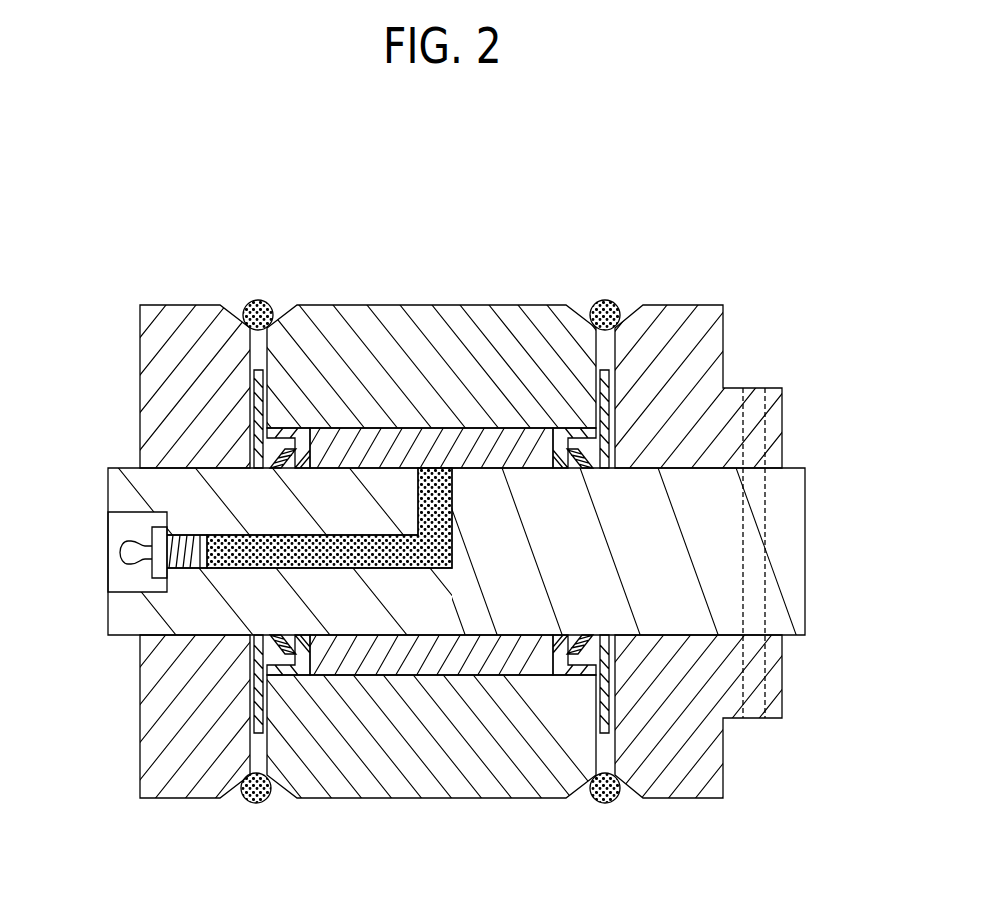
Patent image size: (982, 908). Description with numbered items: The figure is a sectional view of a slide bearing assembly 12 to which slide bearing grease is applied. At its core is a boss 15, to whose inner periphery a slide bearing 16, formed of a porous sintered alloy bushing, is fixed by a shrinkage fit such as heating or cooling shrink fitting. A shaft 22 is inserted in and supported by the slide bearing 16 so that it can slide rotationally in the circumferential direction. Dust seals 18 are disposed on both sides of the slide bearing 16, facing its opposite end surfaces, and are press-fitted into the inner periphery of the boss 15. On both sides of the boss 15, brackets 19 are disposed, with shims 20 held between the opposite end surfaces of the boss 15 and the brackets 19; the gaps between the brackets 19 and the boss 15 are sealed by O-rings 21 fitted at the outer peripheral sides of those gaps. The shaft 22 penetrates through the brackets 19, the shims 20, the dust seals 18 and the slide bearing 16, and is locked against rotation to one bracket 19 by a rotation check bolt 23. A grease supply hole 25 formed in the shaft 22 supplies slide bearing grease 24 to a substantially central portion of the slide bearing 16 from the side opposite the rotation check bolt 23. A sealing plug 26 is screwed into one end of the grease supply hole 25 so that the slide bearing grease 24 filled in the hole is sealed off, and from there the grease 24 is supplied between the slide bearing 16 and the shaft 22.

The slide bearing assembly 12 is at (451, 238).
The boss 15 is at (402, 306).
The slide bearing 16 is at (478, 436).
The dust seal 18 is at (295, 432).
The bracket 19 is at (723, 325).
The shim 20 is at (255, 370).
The O-ring 21 is at (258, 299).
The shaft 22 is at (795, 489).
The rotation check bolt 23 is at (760, 568).
The slide bearing grease 24 is at (262, 565).
The grease supply hole 25 is at (288, 543).
The sealing plug 26 is at (120, 553).